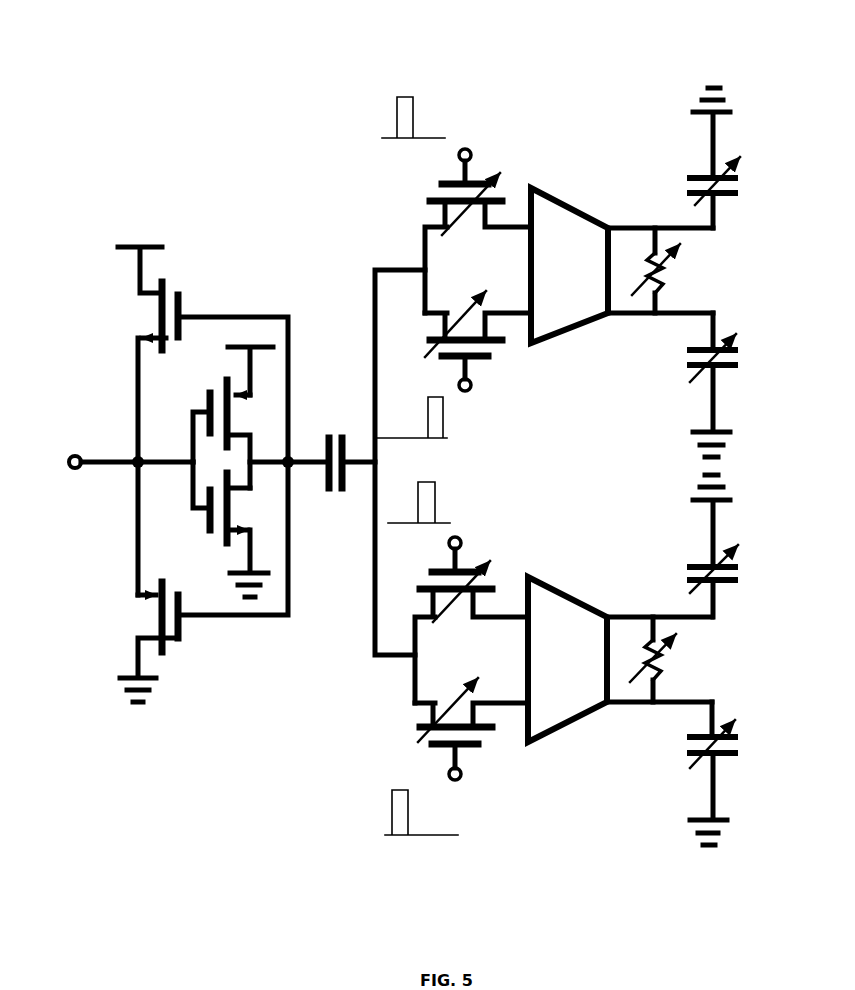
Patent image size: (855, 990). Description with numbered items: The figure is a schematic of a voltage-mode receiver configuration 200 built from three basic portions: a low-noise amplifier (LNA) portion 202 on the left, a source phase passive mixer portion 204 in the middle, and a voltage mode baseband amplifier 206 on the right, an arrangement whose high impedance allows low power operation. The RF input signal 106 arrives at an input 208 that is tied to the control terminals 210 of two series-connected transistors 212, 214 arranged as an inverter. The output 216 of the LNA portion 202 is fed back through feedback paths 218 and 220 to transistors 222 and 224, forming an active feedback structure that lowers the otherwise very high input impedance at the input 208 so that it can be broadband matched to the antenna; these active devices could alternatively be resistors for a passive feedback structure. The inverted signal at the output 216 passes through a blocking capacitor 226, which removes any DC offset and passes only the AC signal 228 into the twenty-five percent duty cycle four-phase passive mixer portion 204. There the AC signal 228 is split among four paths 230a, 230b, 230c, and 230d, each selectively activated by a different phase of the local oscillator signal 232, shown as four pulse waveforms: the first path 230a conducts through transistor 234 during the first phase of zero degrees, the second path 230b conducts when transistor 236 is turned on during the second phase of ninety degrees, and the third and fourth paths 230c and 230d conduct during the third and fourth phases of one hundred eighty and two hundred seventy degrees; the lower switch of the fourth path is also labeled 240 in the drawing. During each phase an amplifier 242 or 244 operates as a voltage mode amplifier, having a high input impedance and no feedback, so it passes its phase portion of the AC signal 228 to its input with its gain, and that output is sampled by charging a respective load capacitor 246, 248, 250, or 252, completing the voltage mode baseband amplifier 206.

The voltage-mode receiver configuration 200 is at (670, 49).
The low-noise amplifier portion 202 is at (234, 238).
The source phase passive mixer portion 204 is at (362, 741).
The voltage mode baseband amplifier 206 is at (623, 800).
The RF input signal 106 is at (79, 470).
The input 208 is at (108, 460).
The control terminals 210 is at (207, 515).
The transistor 212 is at (254, 411).
The transistor 214 is at (250, 514).
The output of the LNA portion 216 is at (292, 458).
The feedback path 218 is at (242, 312).
The feedback path 220 is at (248, 617).
The feedback transistor 222 is at (138, 322).
The feedback transistor 224 is at (137, 623).
The blocking capacitor 226 is at (331, 490).
The AC signal 228 is at (372, 290).
The first path 230a is at (424, 241).
The second path 230b is at (418, 637).
The third path 230c is at (426, 287).
The fourth path 230d is at (414, 677).
The local oscillator signal 232 is at (426, 107).
The transistor 234 is at (484, 178).
The transistor 236 is at (463, 566).
The switching transistor 240 is at (478, 735).
The amplifier 242 is at (566, 208).
The amplifier 244 is at (558, 593).
The load capacitor 246 is at (713, 170).
The load capacitor 248 is at (728, 370).
The load capacitor 250 is at (718, 550).
The load capacitor 252 is at (723, 757).